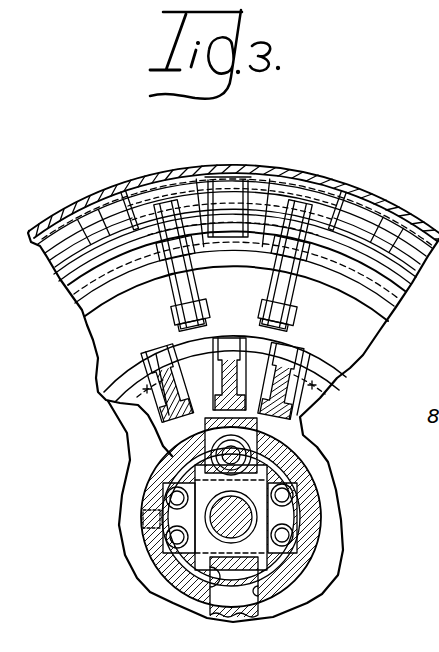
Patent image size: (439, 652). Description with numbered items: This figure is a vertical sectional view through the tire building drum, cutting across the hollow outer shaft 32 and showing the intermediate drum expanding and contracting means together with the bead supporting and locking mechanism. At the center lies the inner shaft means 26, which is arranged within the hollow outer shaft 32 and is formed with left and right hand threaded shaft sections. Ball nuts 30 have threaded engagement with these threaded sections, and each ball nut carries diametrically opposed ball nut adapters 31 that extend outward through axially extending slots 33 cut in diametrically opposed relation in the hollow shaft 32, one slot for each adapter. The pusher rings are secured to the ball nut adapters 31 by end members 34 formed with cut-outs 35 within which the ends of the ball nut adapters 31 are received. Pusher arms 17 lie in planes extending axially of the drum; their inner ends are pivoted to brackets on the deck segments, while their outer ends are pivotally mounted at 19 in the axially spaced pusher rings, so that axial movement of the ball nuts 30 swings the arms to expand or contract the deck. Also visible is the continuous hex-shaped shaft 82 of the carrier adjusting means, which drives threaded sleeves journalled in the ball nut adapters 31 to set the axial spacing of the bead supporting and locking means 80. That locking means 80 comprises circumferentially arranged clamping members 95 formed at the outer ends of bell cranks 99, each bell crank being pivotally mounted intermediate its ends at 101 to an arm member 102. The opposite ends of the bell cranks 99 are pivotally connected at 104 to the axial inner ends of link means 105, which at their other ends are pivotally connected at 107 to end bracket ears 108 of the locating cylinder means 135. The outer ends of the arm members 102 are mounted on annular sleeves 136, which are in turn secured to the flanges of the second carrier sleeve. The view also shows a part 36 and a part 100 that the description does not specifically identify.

The pusher arms 17 is at (152, 423).
The pivotal mounting of pusher arms 19 is at (118, 404).
The inner shaft means 26 is at (215, 527).
The ball nuts 30 is at (297, 520).
The ball nut adapters 31 is at (290, 448).
The hollow outer shaft 32 is at (312, 502).
The axially extending slots 33 is at (317, 573).
The end members 34 is at (282, 468).
The cut-outs 35 is at (195, 597).
The rim 36 is at (348, 184).
The bead supporting and locking means 80 is at (158, 176).
The continuous hex-shaped shaft 82 is at (222, 458).
The clamping members 95 is at (68, 220).
The bell cranks 99 is at (284, 228).
The nut 100 is at (288, 257).
The pivotal mounting of bell cranks 101 is at (239, 195).
The arm members 102 is at (280, 168).
The pivotal connection of bell crank to link 104 is at (66, 292).
The link means 105 is at (150, 300).
The pivotal connection of link to bracket ear 107 is at (180, 323).
The end bracket ears 108 is at (260, 316).
The locating cylinder means 135 is at (90, 329).
The annular sleeves 136 is at (70, 305).